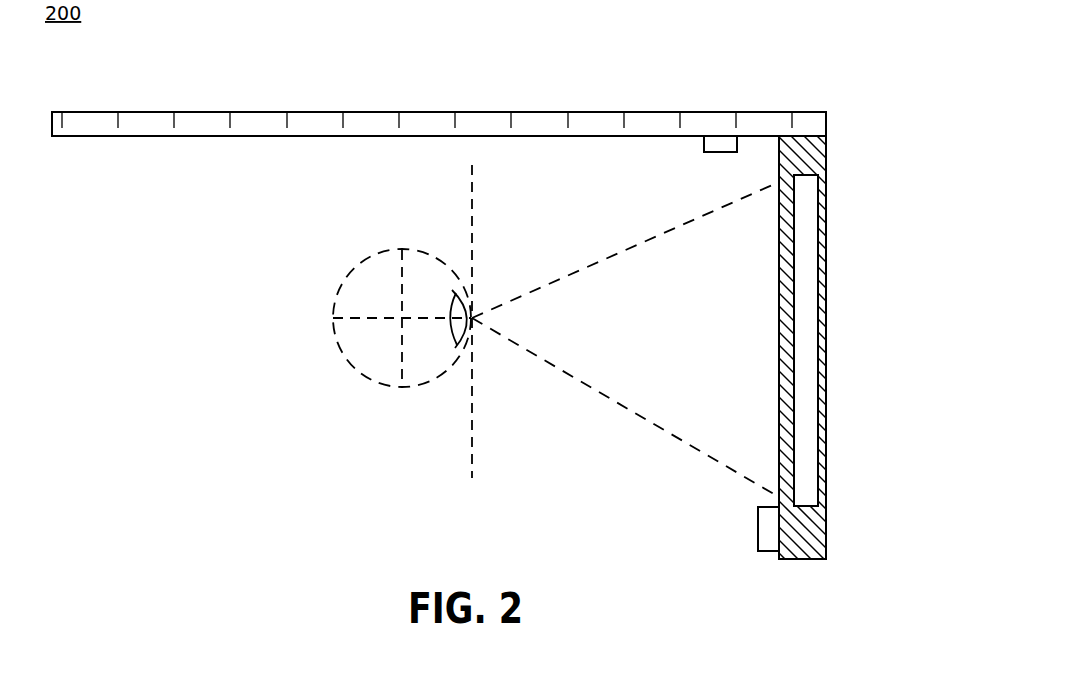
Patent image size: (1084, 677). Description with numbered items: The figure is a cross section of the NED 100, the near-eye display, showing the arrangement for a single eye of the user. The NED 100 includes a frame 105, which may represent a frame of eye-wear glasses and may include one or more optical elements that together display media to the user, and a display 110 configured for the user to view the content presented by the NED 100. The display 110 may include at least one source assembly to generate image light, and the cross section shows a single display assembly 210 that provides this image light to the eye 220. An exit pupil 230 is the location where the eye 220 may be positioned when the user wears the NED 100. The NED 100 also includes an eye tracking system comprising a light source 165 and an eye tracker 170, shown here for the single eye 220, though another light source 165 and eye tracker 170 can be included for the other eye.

The NED 100 is at (878, 123).
The frame 105 is at (714, 108).
The display 110 is at (830, 481).
The light source 165 is at (704, 141).
The eye tracker 170 is at (758, 509).
The display assembly 210 is at (826, 234).
The eye 220 is at (352, 262).
The exit pupil 230 is at (465, 434).